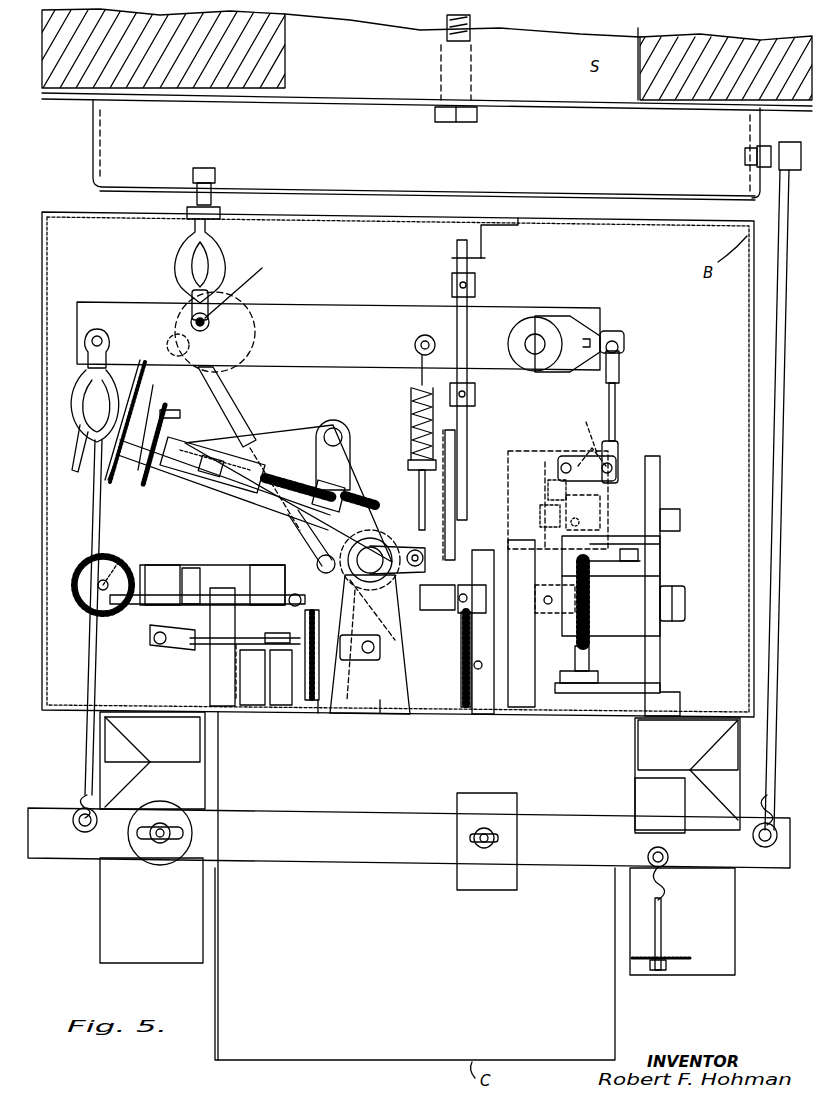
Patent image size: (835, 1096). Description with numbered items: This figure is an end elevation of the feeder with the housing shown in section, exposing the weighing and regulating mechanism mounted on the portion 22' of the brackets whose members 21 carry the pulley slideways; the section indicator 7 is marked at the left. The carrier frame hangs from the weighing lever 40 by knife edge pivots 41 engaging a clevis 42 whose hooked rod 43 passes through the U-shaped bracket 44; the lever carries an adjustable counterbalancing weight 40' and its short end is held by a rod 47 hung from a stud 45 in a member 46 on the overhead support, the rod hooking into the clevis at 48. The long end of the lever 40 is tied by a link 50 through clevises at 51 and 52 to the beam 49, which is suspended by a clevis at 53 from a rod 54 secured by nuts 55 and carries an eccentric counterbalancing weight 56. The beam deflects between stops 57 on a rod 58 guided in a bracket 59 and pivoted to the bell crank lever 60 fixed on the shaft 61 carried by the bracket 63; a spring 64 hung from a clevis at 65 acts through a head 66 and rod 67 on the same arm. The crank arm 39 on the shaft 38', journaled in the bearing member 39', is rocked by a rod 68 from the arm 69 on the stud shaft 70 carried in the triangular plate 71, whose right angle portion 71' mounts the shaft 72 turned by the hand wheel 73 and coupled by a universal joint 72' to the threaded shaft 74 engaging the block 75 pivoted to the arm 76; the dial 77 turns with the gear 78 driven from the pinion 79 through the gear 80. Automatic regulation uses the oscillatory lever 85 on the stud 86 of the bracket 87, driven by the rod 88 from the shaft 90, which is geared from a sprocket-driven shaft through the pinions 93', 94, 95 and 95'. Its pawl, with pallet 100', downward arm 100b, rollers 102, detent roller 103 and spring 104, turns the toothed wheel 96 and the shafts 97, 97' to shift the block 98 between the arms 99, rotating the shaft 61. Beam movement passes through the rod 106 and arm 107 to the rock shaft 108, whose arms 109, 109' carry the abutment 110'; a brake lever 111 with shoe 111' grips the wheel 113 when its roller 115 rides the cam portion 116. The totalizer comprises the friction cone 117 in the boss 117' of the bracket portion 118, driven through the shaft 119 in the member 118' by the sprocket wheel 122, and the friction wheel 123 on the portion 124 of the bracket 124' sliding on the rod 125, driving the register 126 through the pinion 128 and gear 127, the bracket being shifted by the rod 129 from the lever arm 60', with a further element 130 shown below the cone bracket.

The section line 7 is at (72, 400).
The slideway member 21 is at (100, 890).
The bracket portion 22' is at (420, 772).
The shaft 38' is at (235, 332).
The crank arm 39 is at (163, 335).
The bearing member 39' is at (237, 287).
The weighing lever 40 is at (409, 825).
The counterbalancing weight 40' is at (487, 857).
The knife edge pivots 41 is at (670, 855).
The clevis 42 is at (668, 878).
The rod 43 is at (662, 920).
The U-shaped bracket 44 is at (680, 950).
The stud 45 is at (771, 150).
The member 46 is at (694, 196).
The rod 47 is at (768, 680).
The pivot support 48 is at (775, 826).
The beam 49 is at (320, 306).
The link 50 is at (82, 672).
The clevis connection 51 is at (78, 810).
The clevis connection 52 is at (84, 352).
The clevis connection 53 is at (210, 320).
The rod 54 is at (186, 240).
The nuts 55 is at (218, 184).
The counterbalancing weight 56 is at (510, 320).
The stops 57 is at (476, 285).
The rod 58 is at (462, 350).
The bracket 59 is at (486, 254).
The bell crank lever 60 is at (397, 547).
The lever arm 60' is at (372, 620).
The shaft 61 is at (436, 611).
The bracket 63 is at (382, 714).
The spring 64 is at (410, 428).
The clevis connection 65 is at (414, 347).
The head 66 is at (407, 466).
The rod 67 is at (418, 490).
The rod 68 is at (228, 420).
The arm 69 is at (302, 548).
The stud shaft 70 is at (326, 427).
The triangular plate 71 is at (288, 493).
The right angle portion 71' is at (150, 418).
The shaft 72 is at (224, 483).
The universal joint 72' is at (219, 474).
The hand wheel 73 is at (72, 480).
The shaft 74 is at (300, 485).
The block 75 is at (338, 498).
The arm 76 is at (350, 472).
The dial 77 is at (135, 378).
The gear 78 is at (110, 478).
The pinion 79 is at (163, 435).
The gear 80 is at (172, 414).
The oscillatory lever 85 is at (598, 676).
The stud 86 is at (640, 625).
The bracket 87 is at (661, 656).
The rod 88 is at (570, 693).
The shaft 90 is at (405, 665).
The pinion 93' is at (524, 623).
The pinion 94 is at (552, 614).
The pinion 95 is at (498, 632).
The pinion 95' is at (451, 659).
The toothed wheel 96 is at (592, 650).
The shaft 97 is at (473, 587).
The shaft 97' is at (447, 659).
The block 98 is at (305, 618).
The arms 99 is at (365, 540).
The pallet 100' is at (649, 534).
The pawl arm 100b is at (640, 562).
The rollers 102 is at (548, 490).
The detent roller 103 is at (592, 586).
The spring 104 is at (510, 536).
The rod 106 is at (617, 414).
The arm 107 is at (620, 452).
The rock shaft 108 is at (566, 456).
The arm 109 is at (537, 514).
The arm 109' is at (533, 489).
The abutment 110' is at (592, 512).
The brake lever 111 is at (683, 508).
The shoe 111' is at (591, 447).
The wheel 113 is at (563, 430).
The roller 115 is at (640, 555).
The cam portion 116 is at (680, 596).
The friction cone 117 is at (232, 655).
The boss 117' is at (205, 672).
The upstanding portion 118 is at (220, 647).
The vertical member 118' is at (281, 628).
The shaft 119 is at (284, 677).
The sprocket wheel 122 is at (318, 713).
The friction wheel 123 is at (200, 565).
The bracket portion 124 is at (212, 569).
The bracket 124' is at (255, 572).
The rod 125 is at (207, 586).
The register 126 is at (80, 610).
The gear 127 is at (118, 556).
The pinion 128 is at (152, 562).
The rod 129 is at (254, 677).
The link 130 is at (152, 642).